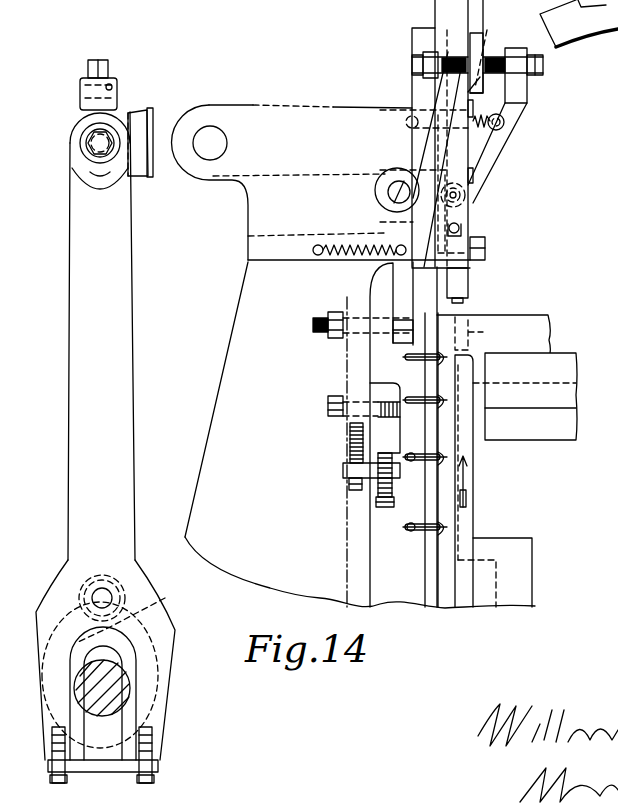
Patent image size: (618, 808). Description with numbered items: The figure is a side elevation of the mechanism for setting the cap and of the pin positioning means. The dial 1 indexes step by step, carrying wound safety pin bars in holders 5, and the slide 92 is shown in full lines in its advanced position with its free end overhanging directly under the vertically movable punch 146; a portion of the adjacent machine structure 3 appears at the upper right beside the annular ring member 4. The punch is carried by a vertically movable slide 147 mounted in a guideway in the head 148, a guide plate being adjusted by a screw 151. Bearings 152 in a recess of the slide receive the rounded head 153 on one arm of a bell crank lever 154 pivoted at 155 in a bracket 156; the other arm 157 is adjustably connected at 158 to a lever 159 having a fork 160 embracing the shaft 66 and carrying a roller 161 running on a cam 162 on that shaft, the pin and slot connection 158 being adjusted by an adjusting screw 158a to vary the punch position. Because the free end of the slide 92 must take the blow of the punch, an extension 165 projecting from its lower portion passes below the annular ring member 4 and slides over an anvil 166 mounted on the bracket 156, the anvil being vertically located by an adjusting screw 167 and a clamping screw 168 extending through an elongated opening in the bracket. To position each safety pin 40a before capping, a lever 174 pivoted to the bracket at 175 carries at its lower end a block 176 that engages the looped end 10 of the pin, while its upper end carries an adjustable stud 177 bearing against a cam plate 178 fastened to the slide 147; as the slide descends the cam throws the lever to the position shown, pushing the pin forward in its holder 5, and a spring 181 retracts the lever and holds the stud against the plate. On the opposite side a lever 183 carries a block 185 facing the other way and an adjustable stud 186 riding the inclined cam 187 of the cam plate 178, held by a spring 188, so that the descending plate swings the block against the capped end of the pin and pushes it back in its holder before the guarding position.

The dial 1 is at (419, 605).
The guide segment 3 is at (617, 46).
The annular ring member 4 is at (435, 13).
The holder 5 is at (427, 400).
The looped end 10 is at (415, 540).
The safety pin 40a is at (418, 357).
The shaft 66 is at (118, 678).
The slide 92 is at (503, 323).
The punch 146 is at (468, 290).
The vertically movable slide 147 is at (410, 28).
The head 148 is at (470, 212).
The screw 151 is at (466, 195).
The bearings 152 is at (510, 104).
The rounded head 153 is at (484, 160).
The bell crank lever 154 is at (335, 106).
The pivot 155 is at (229, 143).
The bracket 156 is at (283, 105).
The other arm 157 is at (174, 108).
The connection 158 is at (104, 134).
The adjusting screw 158a is at (98, 60).
The lever 159 is at (135, 335).
The fork 160 is at (148, 693).
The roller 161 is at (103, 587).
The cam 162 is at (137, 612).
The extension 165 is at (393, 372).
The anvil 166 is at (390, 395).
The adjusting screw 167 is at (388, 508).
The clamping screw 168 is at (337, 408).
The lever 174 is at (400, 222).
The pivot 175 is at (389, 194).
The block 176 is at (363, 330).
The adjustable stud 177 is at (457, 57).
The cam plate 178 is at (473, 30).
The spring 181 is at (330, 246).
The lever 183 is at (522, 90).
The block 185 is at (470, 335).
The adjustable stud 186 is at (503, 51).
The inclined cam 187 is at (480, 45).
The spring 188 is at (500, 126).